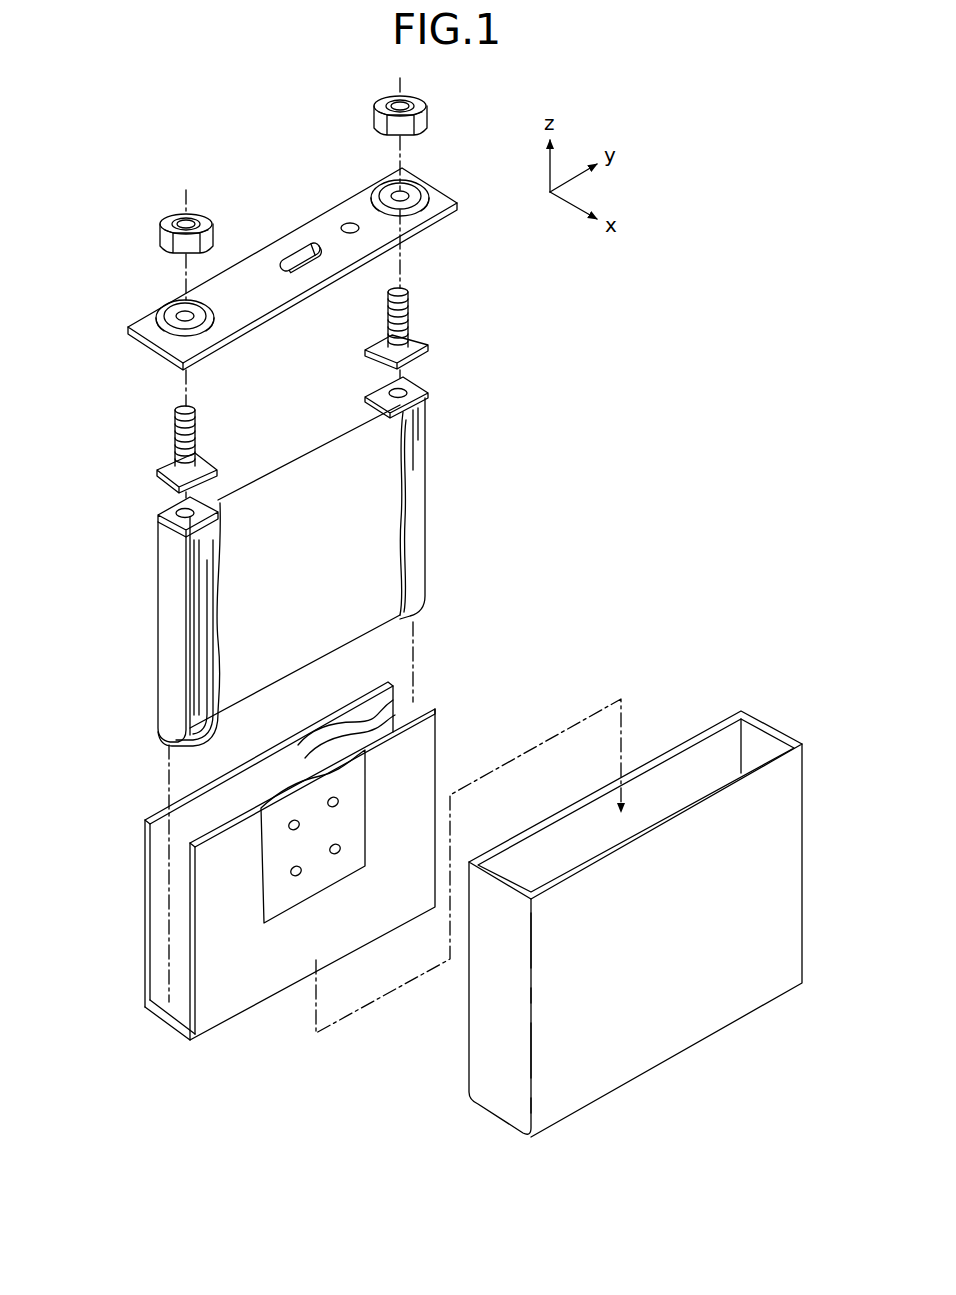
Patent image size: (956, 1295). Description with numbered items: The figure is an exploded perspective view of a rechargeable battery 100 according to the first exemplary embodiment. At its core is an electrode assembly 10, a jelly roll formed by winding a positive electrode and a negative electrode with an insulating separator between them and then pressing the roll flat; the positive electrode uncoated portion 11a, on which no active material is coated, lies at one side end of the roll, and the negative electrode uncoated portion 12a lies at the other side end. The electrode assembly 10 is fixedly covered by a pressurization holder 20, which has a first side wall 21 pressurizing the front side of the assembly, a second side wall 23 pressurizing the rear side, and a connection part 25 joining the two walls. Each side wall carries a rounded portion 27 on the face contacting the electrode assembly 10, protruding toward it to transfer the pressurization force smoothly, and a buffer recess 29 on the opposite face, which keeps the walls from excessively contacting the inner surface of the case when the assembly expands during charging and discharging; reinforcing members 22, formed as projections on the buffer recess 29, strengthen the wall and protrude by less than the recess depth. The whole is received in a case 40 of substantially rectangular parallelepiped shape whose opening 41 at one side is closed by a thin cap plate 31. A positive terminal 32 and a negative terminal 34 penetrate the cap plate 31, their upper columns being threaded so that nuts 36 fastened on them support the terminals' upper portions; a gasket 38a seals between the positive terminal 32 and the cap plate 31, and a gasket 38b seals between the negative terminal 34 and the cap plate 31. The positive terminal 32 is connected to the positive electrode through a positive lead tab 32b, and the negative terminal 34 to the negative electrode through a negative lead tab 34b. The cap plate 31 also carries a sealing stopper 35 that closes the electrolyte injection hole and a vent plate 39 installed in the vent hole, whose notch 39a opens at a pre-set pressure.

The rechargeable battery 100 is at (218, 136).
The electrode assembly 10 is at (288, 561).
The positive electrode uncoated portion 11a is at (203, 675).
The negative electrode uncoated portion 12a is at (408, 535).
The pressurization holder 20 is at (278, 884).
The first side wall 21 is at (196, 1003).
The reinforcing member 22 is at (298, 875).
The second side wall 23 is at (134, 985).
The connection part 25 is at (164, 1025).
The rounded portion 27 is at (398, 706).
The buffer recess 29 is at (266, 747).
The cap plate 31 is at (317, 230).
The positive terminal 32 is at (178, 432).
The positive lead tab 32b is at (168, 580).
The negative terminal 34 is at (407, 313).
The negative lead tab 34b is at (413, 410).
The sealing stopper 35 is at (348, 222).
The nut 36 is at (162, 235).
The gasket 38a is at (168, 300).
The gasket 38b is at (415, 185).
The vent plate 39 is at (292, 252).
The notch 39a is at (310, 267).
The case 40 is at (688, 1067).
The opening 41 is at (706, 770).